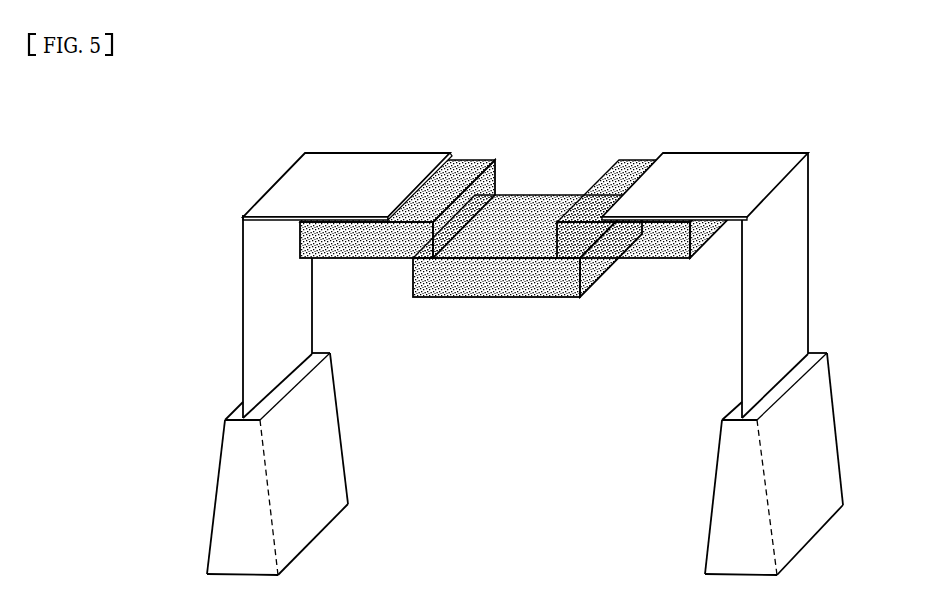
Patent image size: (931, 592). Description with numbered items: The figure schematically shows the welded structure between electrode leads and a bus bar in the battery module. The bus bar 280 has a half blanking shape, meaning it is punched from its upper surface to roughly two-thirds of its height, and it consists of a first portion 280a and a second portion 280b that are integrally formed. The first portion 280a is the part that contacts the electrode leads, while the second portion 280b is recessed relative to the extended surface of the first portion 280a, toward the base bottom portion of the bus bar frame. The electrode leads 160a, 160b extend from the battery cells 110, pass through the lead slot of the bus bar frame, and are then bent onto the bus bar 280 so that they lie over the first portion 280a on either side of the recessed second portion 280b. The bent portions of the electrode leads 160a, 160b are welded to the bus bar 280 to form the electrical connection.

The battery cell 110 is at (307, 510).
The electrode lead 160a is at (295, 181).
The electrode lead 160b is at (722, 168).
The bus bar 280 is at (526, 224).
The first portion 280a is at (373, 240).
The second portion 280b is at (497, 283).